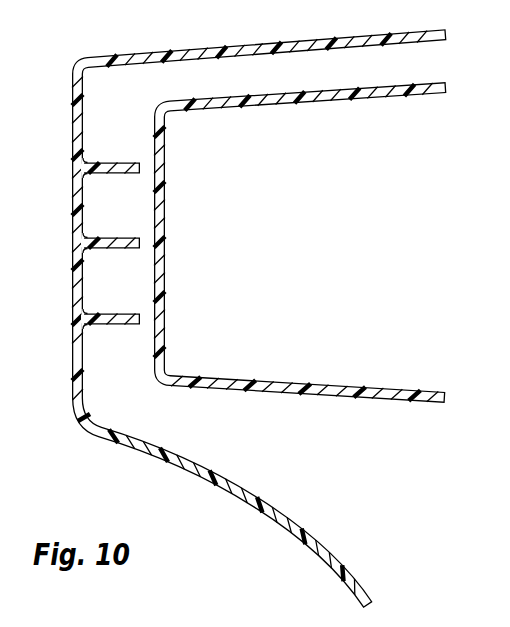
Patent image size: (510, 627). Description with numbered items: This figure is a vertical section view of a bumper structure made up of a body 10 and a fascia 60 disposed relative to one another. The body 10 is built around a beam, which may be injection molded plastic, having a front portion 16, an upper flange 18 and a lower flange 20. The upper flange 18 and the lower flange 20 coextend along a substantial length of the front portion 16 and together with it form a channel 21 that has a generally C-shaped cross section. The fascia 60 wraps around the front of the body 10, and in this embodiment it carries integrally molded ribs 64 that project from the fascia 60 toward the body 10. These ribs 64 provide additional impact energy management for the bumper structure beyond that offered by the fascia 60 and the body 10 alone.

The body 10 is at (300, 272).
The front portion 16 is at (165, 208).
The upper flange 18 is at (305, 107).
The lower flange 20 is at (355, 383).
The channel 21 is at (332, 262).
The fascia 60 is at (221, 44).
The ribs 64 is at (106, 163).